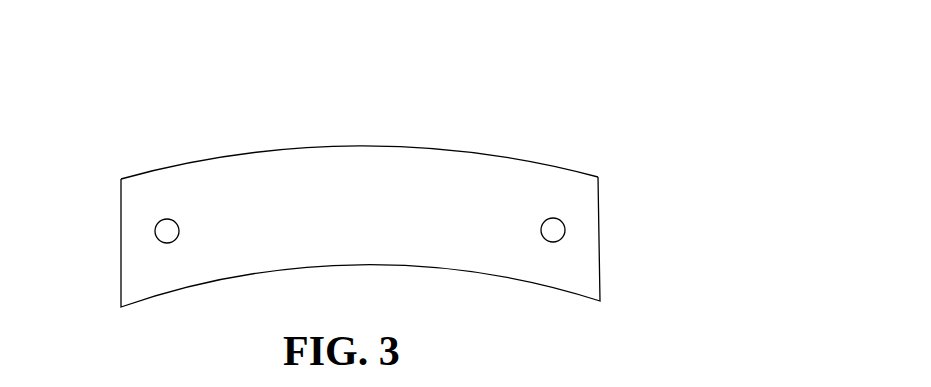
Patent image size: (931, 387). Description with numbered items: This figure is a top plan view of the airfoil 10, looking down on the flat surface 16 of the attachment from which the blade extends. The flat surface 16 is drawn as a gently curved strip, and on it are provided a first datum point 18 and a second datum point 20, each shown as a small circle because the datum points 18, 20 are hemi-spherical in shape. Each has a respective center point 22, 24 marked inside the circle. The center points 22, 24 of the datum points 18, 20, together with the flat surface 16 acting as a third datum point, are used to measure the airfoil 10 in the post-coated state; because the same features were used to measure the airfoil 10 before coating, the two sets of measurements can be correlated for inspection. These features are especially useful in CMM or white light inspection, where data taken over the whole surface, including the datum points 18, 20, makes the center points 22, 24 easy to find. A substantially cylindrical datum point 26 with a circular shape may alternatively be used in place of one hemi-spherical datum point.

The airfoil 10 is at (518, 98).
The flat surface 16 is at (280, 168).
The first datum point 18 is at (548, 220).
The second datum point 20 is at (168, 221).
The center point 22 is at (553, 230).
The center point 24 is at (167, 231).
The cylindrical datum point 26 is at (322, 145).